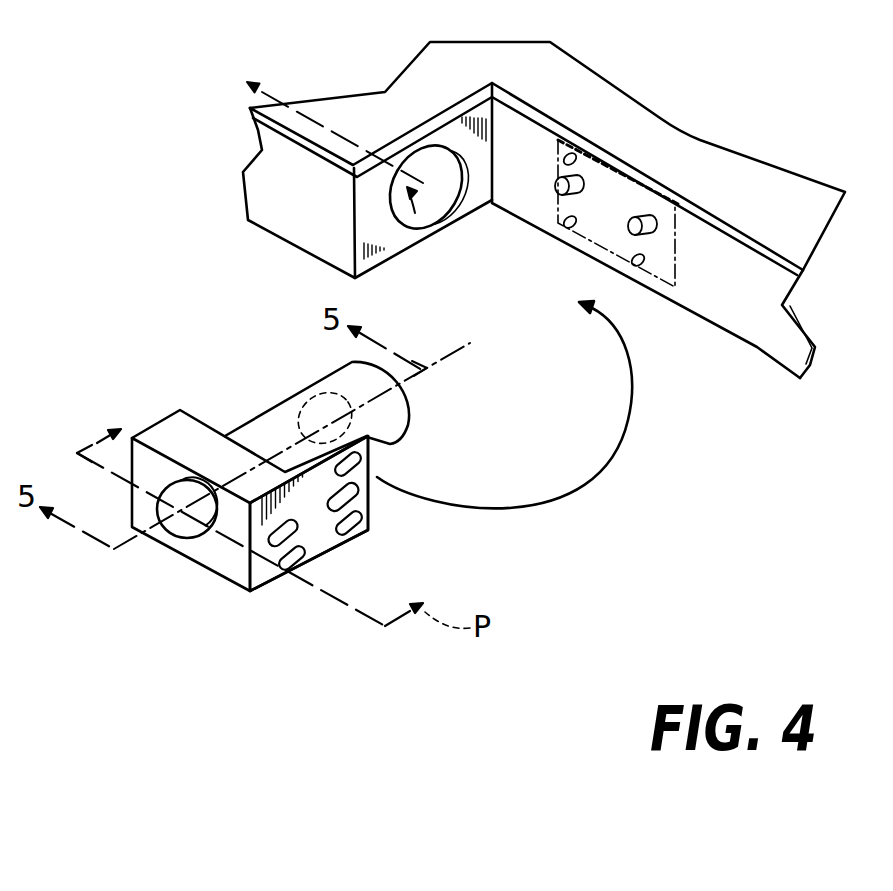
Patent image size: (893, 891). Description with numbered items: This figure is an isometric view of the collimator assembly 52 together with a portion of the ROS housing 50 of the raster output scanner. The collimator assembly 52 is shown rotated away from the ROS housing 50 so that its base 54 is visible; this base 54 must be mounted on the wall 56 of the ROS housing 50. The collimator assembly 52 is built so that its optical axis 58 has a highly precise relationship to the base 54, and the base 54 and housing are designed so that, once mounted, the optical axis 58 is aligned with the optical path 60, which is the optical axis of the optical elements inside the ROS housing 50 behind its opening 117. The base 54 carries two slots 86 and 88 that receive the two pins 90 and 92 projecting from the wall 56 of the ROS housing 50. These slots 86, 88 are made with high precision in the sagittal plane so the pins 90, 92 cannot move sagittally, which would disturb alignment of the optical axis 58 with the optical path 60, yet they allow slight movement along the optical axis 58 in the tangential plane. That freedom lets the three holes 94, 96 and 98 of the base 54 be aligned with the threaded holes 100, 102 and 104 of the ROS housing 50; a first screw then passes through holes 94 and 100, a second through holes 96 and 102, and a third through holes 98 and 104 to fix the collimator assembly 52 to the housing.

The ROS housing 50 is at (567, 65).
The collimator assembly 52 is at (228, 344).
The base 54 is at (323, 545).
The wall 56 is at (768, 343).
The optical axis 58 is at (440, 362).
The optical path 60 is at (282, 100).
The slot 86 is at (268, 548).
The slot 88 is at (355, 497).
The pin 90 is at (645, 212).
The pin 92 is at (578, 174).
The hole 94 is at (290, 568).
The hole 96 is at (355, 522).
The hole 98 is at (350, 468).
The hole 100 is at (638, 266).
The hole 102 is at (562, 222).
The hole 104 is at (575, 151).
The opening 117 is at (373, 250).